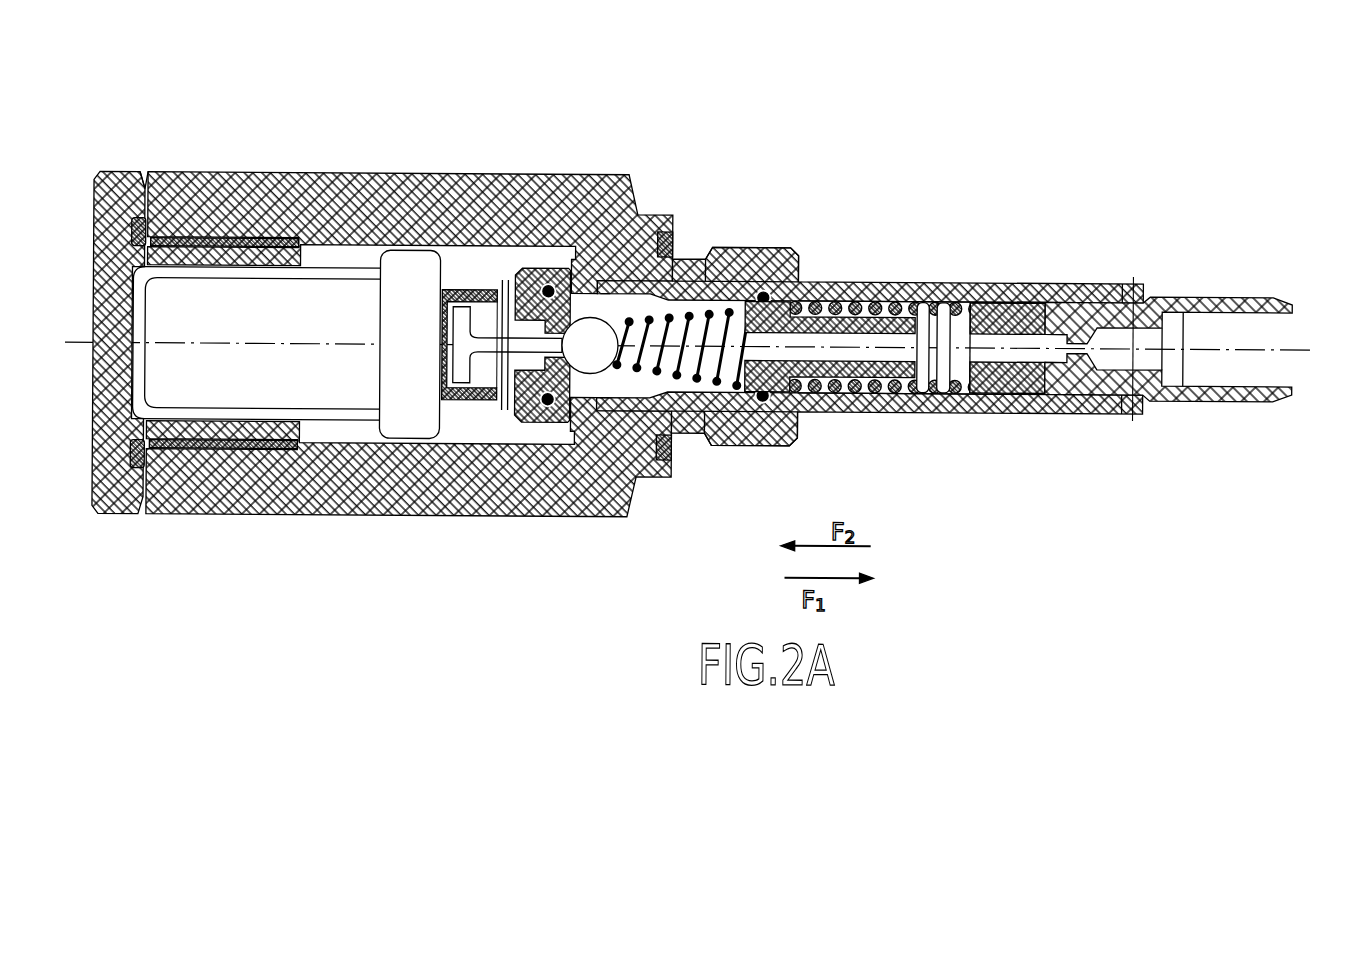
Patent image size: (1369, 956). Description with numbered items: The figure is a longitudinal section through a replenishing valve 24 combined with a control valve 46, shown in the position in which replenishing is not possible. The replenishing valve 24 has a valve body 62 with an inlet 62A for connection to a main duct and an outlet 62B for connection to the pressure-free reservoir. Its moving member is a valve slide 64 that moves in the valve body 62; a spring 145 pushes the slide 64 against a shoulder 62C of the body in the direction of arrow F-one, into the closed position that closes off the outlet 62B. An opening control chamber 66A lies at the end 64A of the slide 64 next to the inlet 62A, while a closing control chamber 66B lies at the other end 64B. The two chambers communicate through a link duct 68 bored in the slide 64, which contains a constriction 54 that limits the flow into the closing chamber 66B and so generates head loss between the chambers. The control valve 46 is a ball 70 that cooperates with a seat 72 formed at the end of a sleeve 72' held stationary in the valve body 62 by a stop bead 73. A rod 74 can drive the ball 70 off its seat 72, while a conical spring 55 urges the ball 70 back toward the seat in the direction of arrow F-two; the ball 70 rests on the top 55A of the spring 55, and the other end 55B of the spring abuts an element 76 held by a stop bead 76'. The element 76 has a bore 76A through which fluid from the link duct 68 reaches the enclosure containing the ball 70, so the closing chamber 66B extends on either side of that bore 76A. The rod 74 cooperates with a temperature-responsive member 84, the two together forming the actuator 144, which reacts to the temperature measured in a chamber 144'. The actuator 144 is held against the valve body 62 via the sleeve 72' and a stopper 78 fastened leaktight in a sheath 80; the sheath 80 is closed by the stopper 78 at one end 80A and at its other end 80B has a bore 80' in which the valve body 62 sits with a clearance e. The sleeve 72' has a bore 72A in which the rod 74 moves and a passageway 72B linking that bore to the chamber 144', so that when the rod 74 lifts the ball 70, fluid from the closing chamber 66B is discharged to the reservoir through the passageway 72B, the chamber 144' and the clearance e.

The replenishing valve 24 is at (1062, 250).
The control valve 46 is at (600, 288).
The constriction 54 is at (1078, 286).
The spring 55 is at (590, 366).
The top of the spring 55A is at (606, 398).
The other end of the spring 55B is at (764, 400).
The valve body 62 is at (1112, 288).
The inlet 62A is at (1293, 377).
The outlet 62B is at (1133, 409).
The shoulder 62C is at (1077, 407).
The valve slide 64 is at (1038, 403).
The end of the slide 64A is at (1172, 368).
The other end of the slide 64B is at (990, 297).
The opening control chamber 66A is at (1270, 325).
The closing control chamber 66B is at (703, 389).
The link duct 68 is at (1047, 338).
The ball 70 is at (672, 247).
The seat 72 is at (544, 415).
The bore 72A is at (548, 282).
The passageway 72B is at (505, 410).
The sleeve 72' is at (448, 426).
The stop bead 73 is at (480, 386).
The rod 74 is at (500, 335).
The element 76 is at (922, 314).
The bore 76A is at (846, 352).
The stop bead 76' is at (817, 442).
The stopper 78 is at (97, 429).
The sheath 80 is at (409, 321).
The end of the sheath 80A is at (147, 164).
The other end of the sheath 80B is at (798, 236).
The bore 80' is at (870, 322).
The member responsive to temperature 84 is at (242, 368).
The actuator 144 is at (257, 273).
The chamber 144' is at (423, 282).
The spring 145 is at (930, 299).
The clearance e is at (827, 294).